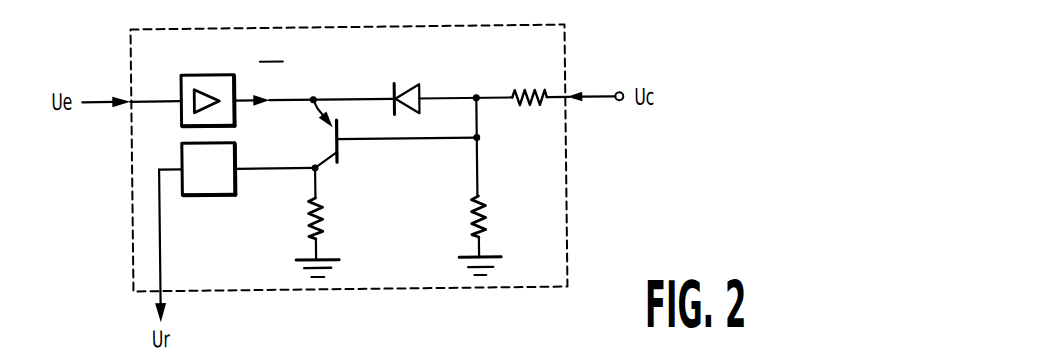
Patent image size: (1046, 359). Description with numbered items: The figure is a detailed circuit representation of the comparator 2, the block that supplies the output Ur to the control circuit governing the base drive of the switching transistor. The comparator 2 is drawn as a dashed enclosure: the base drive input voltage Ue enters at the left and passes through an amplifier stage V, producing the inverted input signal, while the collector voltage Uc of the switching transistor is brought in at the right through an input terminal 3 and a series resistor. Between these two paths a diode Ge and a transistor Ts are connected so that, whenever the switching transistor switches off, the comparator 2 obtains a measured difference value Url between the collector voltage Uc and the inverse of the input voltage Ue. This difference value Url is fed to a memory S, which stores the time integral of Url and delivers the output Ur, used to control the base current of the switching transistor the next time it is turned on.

The comparator 2 is at (567, 203).
The control terminal Uc 3 is at (619, 94).
The amplifier V is at (221, 78).
The memory S is at (192, 185).
The transistor Ts is at (321, 133).
The diode Ge is at (404, 83).